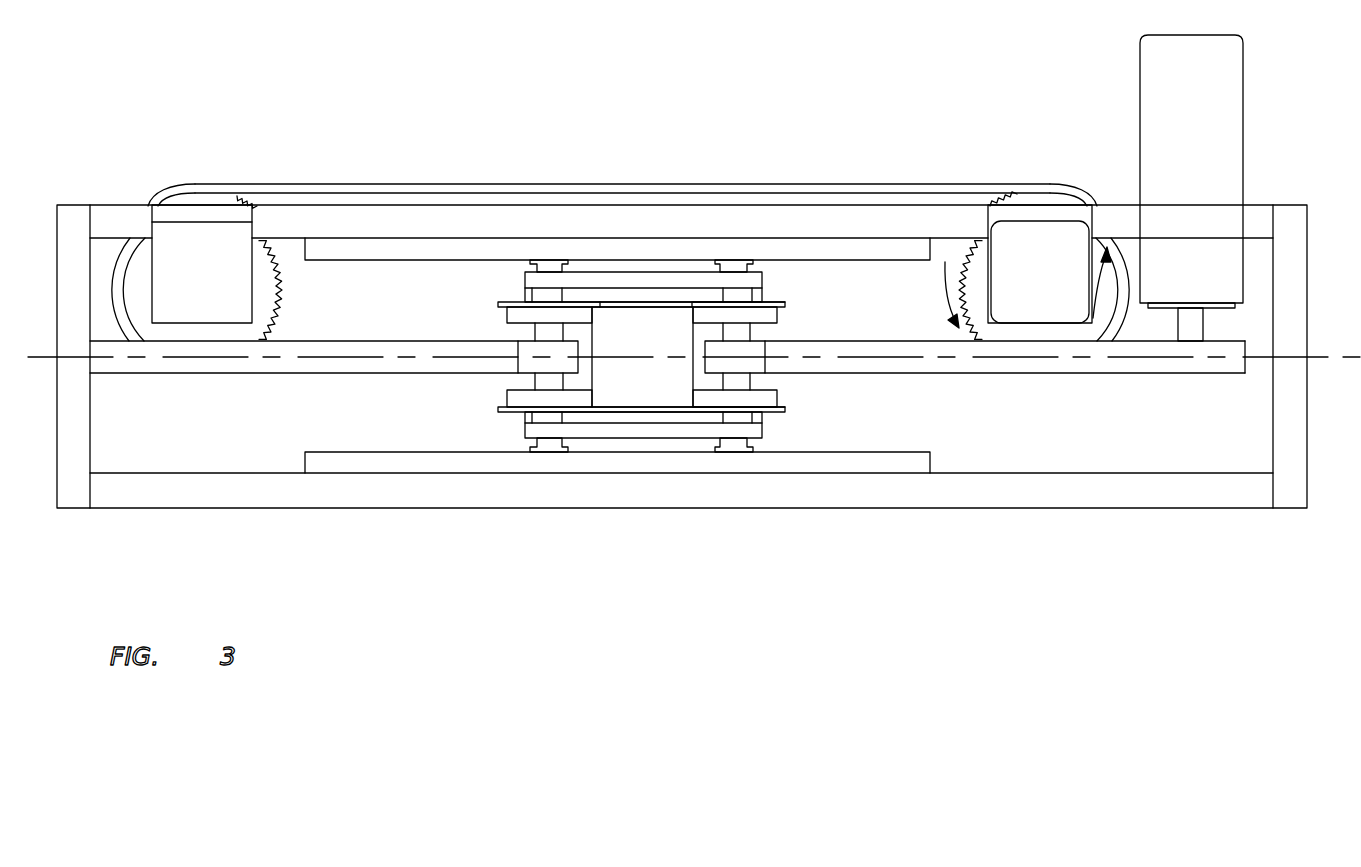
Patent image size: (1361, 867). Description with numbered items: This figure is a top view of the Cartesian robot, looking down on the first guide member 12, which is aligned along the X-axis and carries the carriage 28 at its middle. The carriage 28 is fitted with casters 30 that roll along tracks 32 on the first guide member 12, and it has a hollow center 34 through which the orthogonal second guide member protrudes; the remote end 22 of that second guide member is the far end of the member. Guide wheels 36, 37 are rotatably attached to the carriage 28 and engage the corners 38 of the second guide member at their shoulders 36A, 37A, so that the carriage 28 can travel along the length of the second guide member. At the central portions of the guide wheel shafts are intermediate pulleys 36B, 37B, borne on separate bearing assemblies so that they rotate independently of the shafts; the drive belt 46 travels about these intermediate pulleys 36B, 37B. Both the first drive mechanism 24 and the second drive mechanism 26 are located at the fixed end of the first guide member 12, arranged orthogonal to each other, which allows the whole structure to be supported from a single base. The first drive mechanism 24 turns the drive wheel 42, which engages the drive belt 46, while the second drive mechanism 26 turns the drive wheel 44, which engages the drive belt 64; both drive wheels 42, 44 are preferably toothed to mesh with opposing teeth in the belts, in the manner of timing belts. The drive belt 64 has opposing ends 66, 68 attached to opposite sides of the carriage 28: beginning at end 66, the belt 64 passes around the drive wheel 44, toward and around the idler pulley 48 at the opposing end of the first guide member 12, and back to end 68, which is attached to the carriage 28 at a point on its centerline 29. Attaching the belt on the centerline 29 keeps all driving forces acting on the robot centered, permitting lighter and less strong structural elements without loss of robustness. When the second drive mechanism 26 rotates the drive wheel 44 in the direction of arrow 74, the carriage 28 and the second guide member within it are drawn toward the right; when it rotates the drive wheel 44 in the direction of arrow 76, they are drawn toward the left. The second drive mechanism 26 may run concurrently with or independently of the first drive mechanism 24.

The first guide member 12 is at (968, 548).
The second or remote end 22 is at (657, 370).
The first drive mechanism 24 is at (1240, 95).
The second drive mechanism 26 is at (1068, 237).
The carriage 28 is at (705, 283).
The centerline 29 is at (238, 360).
The casters 30 is at (545, 262).
The tracks 32 is at (332, 247).
The hollow center 34 is at (648, 420).
The guide wheel 36 is at (513, 304).
The shoulder 36A is at (507, 316).
The intermediate pulley 36B is at (528, 357).
The guide wheel 37 is at (773, 303).
The shoulder 37A is at (777, 316).
The intermediate pulley 37B is at (767, 357).
The corners 38 is at (687, 318).
The drive wheel 42 is at (1190, 384).
The drive wheel 44 is at (1040, 200).
The drive belt 46 is at (973, 362).
The idler pulley 48 is at (202, 200).
The drive belt 64 is at (842, 188).
The end of drive belt 66 is at (752, 332).
The end of drive belt 68 is at (547, 333).
The arrow 74 is at (945, 292).
The arrow 76 is at (1130, 292).